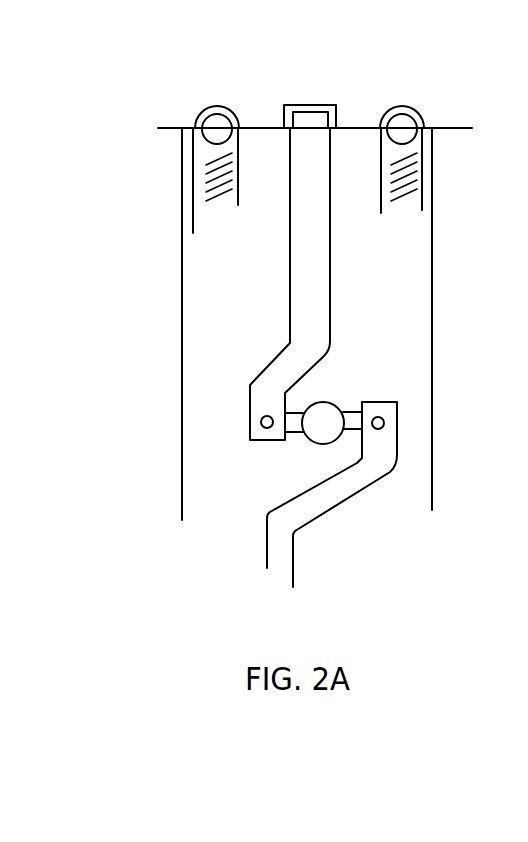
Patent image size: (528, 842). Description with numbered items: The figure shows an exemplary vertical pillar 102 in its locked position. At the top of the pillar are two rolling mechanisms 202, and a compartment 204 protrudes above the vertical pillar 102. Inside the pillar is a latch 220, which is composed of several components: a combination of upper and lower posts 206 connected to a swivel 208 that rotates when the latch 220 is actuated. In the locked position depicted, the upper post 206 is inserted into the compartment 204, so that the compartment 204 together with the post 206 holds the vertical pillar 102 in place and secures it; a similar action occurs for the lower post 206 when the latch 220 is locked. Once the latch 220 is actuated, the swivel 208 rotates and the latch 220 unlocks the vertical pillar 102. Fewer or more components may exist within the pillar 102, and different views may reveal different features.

The vertical pillar 102 is at (181, 203).
The rolling mechanisms 202 is at (200, 104).
The compartment 204 is at (320, 104).
The upper and lower posts 206 is at (310, 288).
The swivel 208 is at (317, 432).
The latch 220 is at (308, 322).